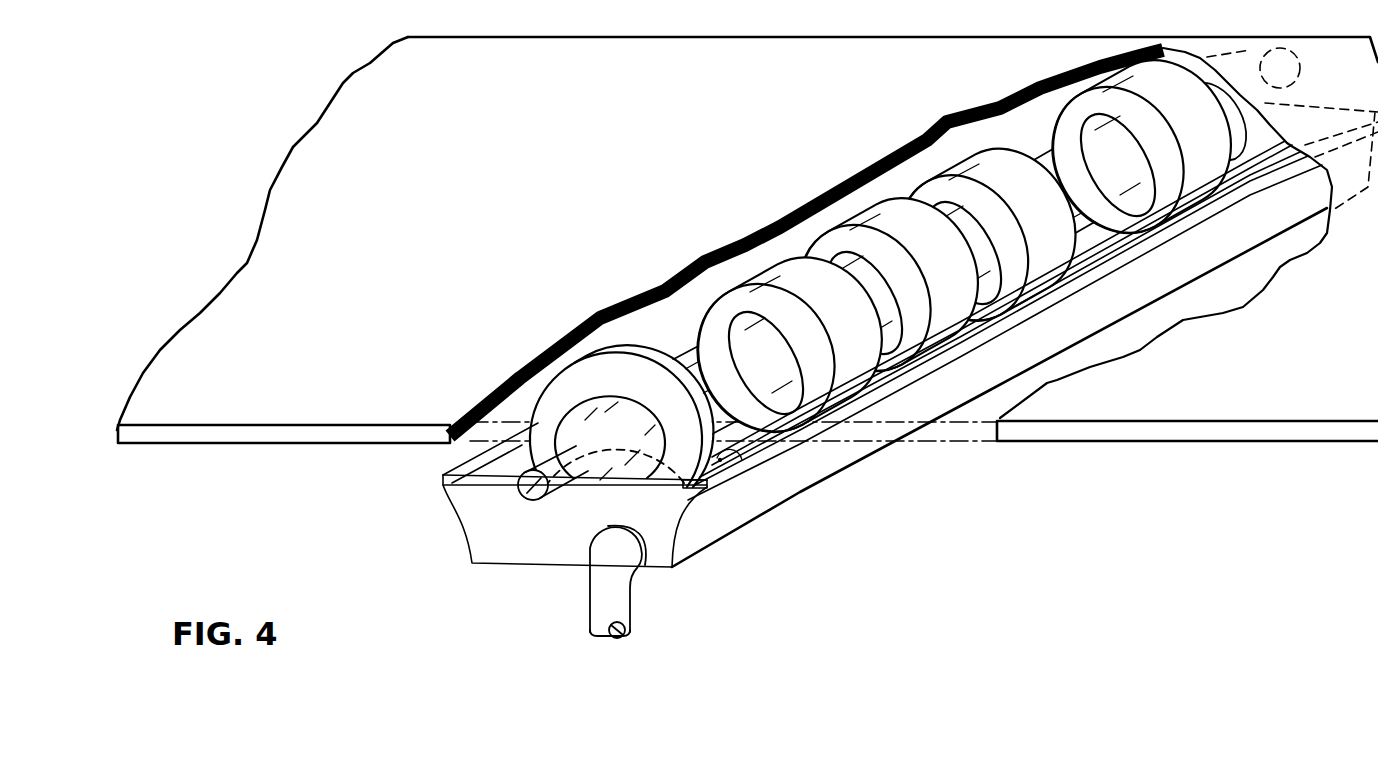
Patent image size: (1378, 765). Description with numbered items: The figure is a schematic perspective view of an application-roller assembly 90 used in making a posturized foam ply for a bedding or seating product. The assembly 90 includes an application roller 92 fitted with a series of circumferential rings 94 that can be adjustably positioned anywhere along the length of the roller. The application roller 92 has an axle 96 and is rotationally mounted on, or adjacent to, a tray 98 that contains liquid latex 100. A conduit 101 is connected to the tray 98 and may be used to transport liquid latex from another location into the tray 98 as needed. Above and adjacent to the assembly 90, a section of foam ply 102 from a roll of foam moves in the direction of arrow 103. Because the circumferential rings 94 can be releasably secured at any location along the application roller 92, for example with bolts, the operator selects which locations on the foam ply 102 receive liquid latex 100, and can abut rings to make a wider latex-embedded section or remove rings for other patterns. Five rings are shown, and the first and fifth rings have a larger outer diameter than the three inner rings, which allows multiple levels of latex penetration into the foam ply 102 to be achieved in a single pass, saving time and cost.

The application-roller assembly 90 is at (394, 498).
The application roller 92 is at (1106, 248).
The circumferential rings 94 is at (1050, 120).
The axle 96 is at (530, 487).
The tray 98 is at (825, 465).
The liquid latex 100 is at (742, 452).
The conduit 101 is at (592, 607).
The foam ply 102 is at (275, 443).
The arrow 103 is at (536, 213).